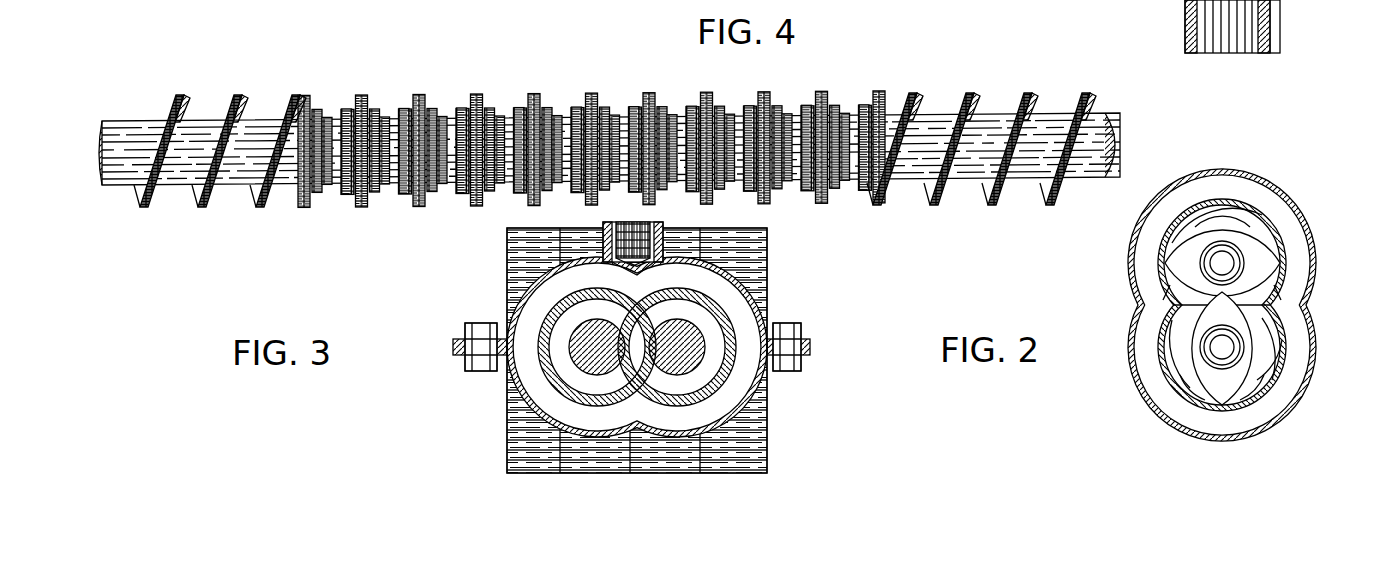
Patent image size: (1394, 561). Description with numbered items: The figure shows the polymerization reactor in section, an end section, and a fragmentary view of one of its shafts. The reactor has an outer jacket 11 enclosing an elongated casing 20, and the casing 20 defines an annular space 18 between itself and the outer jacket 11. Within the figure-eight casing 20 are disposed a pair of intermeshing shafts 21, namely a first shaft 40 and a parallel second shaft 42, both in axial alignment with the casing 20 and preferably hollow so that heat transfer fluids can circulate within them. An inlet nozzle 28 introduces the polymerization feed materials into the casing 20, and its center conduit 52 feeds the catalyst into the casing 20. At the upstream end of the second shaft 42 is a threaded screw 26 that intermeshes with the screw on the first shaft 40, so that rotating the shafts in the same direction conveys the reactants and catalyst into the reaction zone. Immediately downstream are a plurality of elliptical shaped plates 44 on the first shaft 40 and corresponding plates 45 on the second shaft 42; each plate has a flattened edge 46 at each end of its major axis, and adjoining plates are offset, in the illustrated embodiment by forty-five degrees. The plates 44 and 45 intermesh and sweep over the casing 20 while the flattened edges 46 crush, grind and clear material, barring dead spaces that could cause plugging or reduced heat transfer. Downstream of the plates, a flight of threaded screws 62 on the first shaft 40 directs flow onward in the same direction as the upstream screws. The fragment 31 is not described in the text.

In FIG. 3, the outer jacket 11 is at (758, 296).
In FIG. 3, the annular space 18 is at (548, 398).
In FIG. 2, the annular space 18 is at (1243, 195).
In FIG. 3, the elongated casing 20 is at (541, 378).
In FIG. 2, the elongated casing 20 is at (1290, 250).
In FIG. 4, the intermeshing shafts 21 is at (609, 147).
In FIG. 4, the threaded screw 26 is at (182, 118).
In FIG. 3, the inlet nozzle 28 is at (600, 240).
In FIG. 4, the shaft fragment 31 is at (1183, 6).
In FIG. 4, the first shaft 40 is at (172, 187).
In FIG. 3, the first shaft 40 is at (573, 333).
In FIG. 2, the first shaft 40 is at (1150, 253).
In FIG. 4, the second shaft 42 is at (611, 149).
In FIG. 3, the second shaft 42 is at (700, 367).
In FIG. 2, the second shaft 42 is at (1200, 360).
In FIG. 2, the elliptical shaped plates 44 is at (1220, 217).
In FIG. 2, the elliptical plates 45 is at (1257, 380).
In FIG. 4, the flattened edge 46 is at (566, 150).
In FIG. 2, the flattened edge 46 is at (1267, 217).
In FIG. 3, the center conduit 52 is at (652, 243).
In FIG. 4, the flight of threaded screws 62 is at (1033, 100).